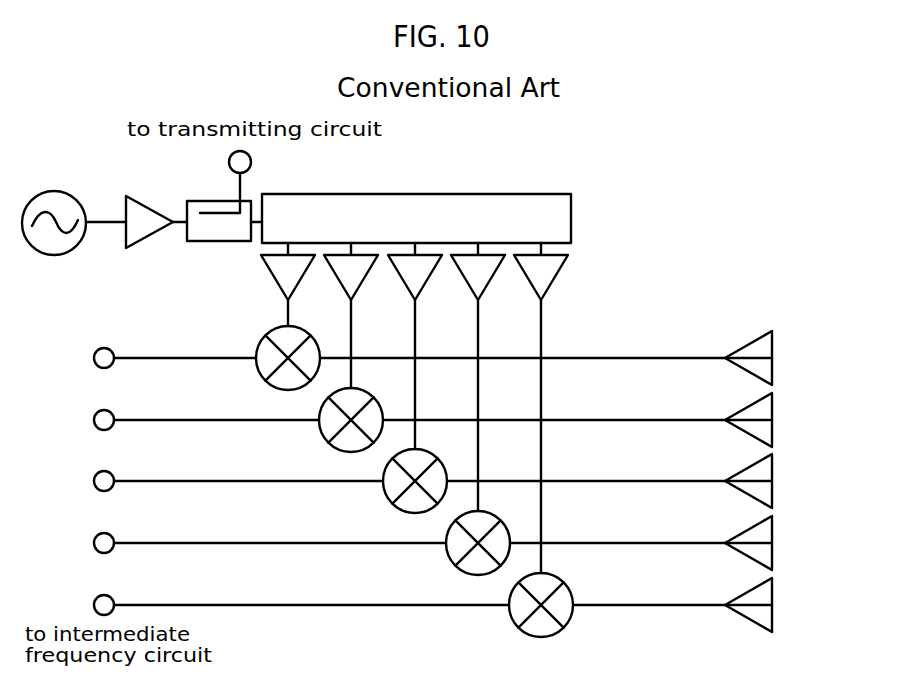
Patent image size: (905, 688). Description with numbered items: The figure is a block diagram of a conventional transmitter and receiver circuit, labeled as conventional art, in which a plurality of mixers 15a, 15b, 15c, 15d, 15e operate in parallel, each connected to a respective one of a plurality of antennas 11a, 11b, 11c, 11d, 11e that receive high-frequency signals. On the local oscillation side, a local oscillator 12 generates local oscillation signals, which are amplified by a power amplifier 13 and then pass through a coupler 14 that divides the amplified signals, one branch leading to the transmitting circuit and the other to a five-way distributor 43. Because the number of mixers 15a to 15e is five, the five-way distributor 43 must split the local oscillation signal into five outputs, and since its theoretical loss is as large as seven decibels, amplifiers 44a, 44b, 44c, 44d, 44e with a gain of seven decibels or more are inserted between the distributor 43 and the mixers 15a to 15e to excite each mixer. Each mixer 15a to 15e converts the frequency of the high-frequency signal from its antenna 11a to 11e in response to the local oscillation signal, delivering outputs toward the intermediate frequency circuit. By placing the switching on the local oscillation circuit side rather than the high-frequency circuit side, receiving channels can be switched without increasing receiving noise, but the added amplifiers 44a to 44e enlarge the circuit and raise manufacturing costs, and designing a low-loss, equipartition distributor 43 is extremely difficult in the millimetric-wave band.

The local oscillator 12 is at (76, 198).
The power amplifier 13 is at (146, 200).
The coupler 14 is at (247, 194).
The five-way distributor 43 is at (522, 193).
The amplifier 44a is at (268, 268).
The amplifier 44b is at (331, 268).
The amplifier 44c is at (395, 268).
The amplifier 44d is at (458, 268).
The amplifier 44e is at (521, 268).
The mixer 15a is at (260, 341).
The mixer 15b is at (323, 403).
The mixer 15c is at (387, 464).
The mixer 15d is at (450, 526).
The mixer 15e is at (513, 588).
The antenna 11a is at (750, 343).
The antenna 11b is at (750, 405).
The antenna 11c is at (750, 466).
The antenna 11d is at (750, 528).
The antenna 11e is at (750, 590).